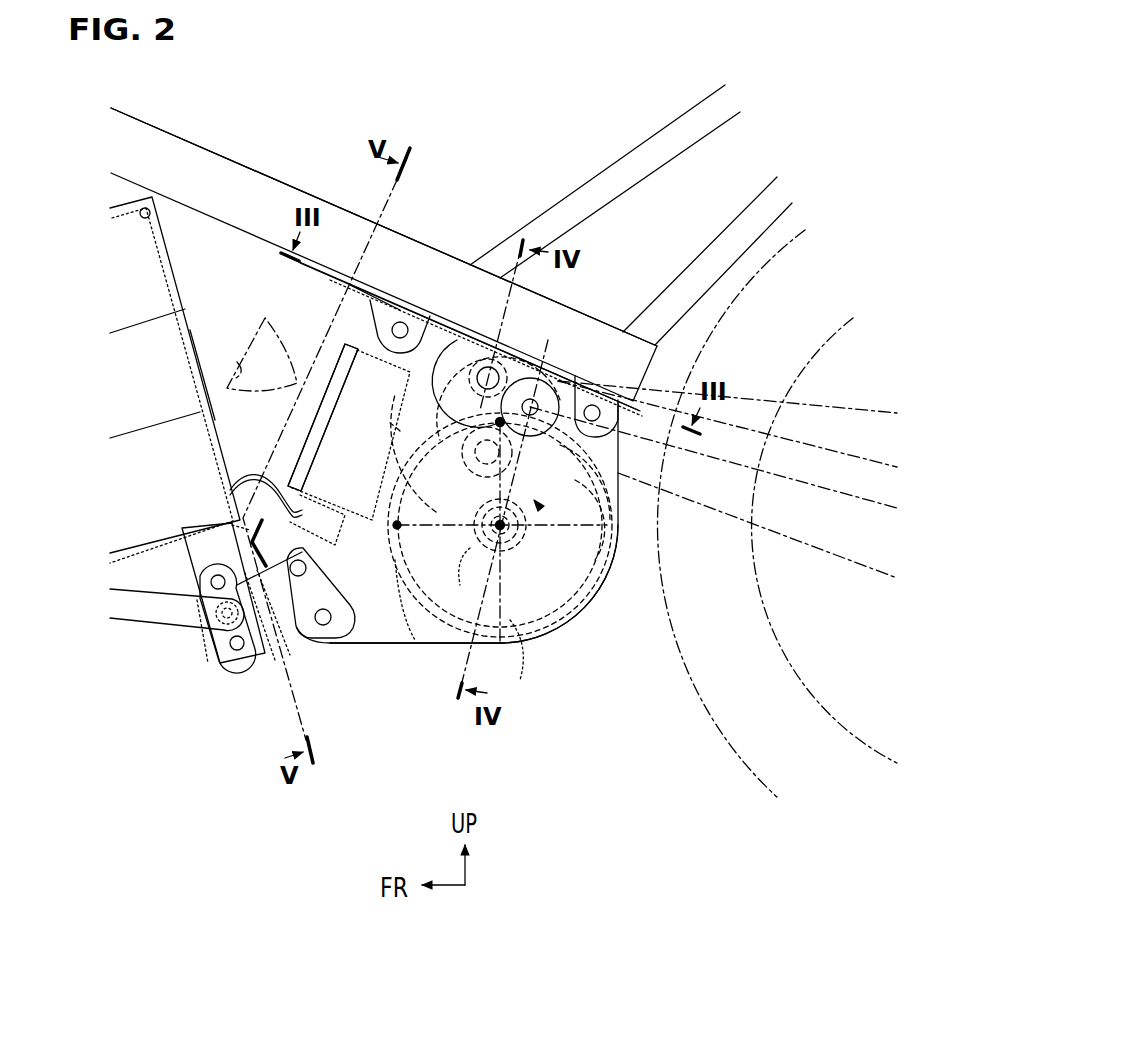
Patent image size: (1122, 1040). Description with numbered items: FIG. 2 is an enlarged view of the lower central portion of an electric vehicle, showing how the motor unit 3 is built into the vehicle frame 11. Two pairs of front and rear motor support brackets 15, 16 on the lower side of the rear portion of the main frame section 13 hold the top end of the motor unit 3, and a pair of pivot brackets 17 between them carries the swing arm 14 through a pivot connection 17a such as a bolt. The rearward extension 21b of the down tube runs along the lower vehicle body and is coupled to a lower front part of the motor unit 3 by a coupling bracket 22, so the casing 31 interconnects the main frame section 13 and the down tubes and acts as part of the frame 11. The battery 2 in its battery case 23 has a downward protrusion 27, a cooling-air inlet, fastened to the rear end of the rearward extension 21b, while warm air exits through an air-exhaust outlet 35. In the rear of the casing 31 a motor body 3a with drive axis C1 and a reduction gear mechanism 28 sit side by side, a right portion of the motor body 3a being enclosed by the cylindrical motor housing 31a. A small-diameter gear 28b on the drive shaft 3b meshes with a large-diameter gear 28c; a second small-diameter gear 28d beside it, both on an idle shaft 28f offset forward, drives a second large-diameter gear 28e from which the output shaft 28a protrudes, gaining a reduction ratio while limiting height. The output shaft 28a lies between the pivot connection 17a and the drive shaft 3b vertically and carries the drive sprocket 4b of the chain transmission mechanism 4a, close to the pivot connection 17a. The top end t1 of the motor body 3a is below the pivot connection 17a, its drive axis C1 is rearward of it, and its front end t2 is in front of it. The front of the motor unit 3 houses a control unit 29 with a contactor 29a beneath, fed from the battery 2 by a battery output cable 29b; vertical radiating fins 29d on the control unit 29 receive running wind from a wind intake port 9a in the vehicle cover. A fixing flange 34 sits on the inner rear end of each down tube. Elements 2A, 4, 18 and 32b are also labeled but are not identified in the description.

The battery 2 is at (170, 345).
The pillar 2A is at (195, 318).
The motor unit 3 is at (474, 584).
The motor body 3a is at (523, 665).
The drive shaft 3b is at (453, 580).
The window glass 4 is at (700, 690).
The chain transmission mechanism 4a is at (703, 512).
The drive sprocket 4b is at (553, 392).
The wind intake port 9a is at (240, 372).
The vehicle frame 11 is at (384, 227).
The main frame section 13 is at (445, 268).
The swing arm 14 is at (731, 447).
The front motor support brackets 15 is at (375, 288).
The rear motor support brackets 16 is at (597, 427).
The pivot brackets 17 is at (470, 372).
The pivot connection 17a is at (473, 358).
The side frame 18 is at (590, 168).
The rearward extension 21b is at (147, 608).
The coupling bracket 22 is at (283, 622).
The battery case 23 is at (220, 430).
The downward protrusion 27 is at (212, 663).
The reduction gear mechanism 28 is at (520, 555).
The output shaft 28a is at (536, 373).
The small-diameter gear 28b is at (473, 552).
The large-diameter gear 28c is at (455, 518).
The second small-diameter gear 28d is at (402, 490).
The second large-diameter gear 28e is at (572, 502).
The idle shaft 28f is at (440, 446).
The control unit 29 is at (323, 417).
The contactor 29a is at (240, 520).
The battery output cable 29b is at (240, 480).
The radiating fins 29d is at (343, 350).
The casing 31 is at (371, 650).
The motor housing 31a is at (408, 640).
The pin 32b is at (223, 625).
The fixing flange 34 is at (238, 652).
The air-exhaust outlet 35 is at (150, 213).
The top end t1 is at (493, 421).
The front end t2 is at (395, 528).
The rotational center axis C1 is at (530, 590).